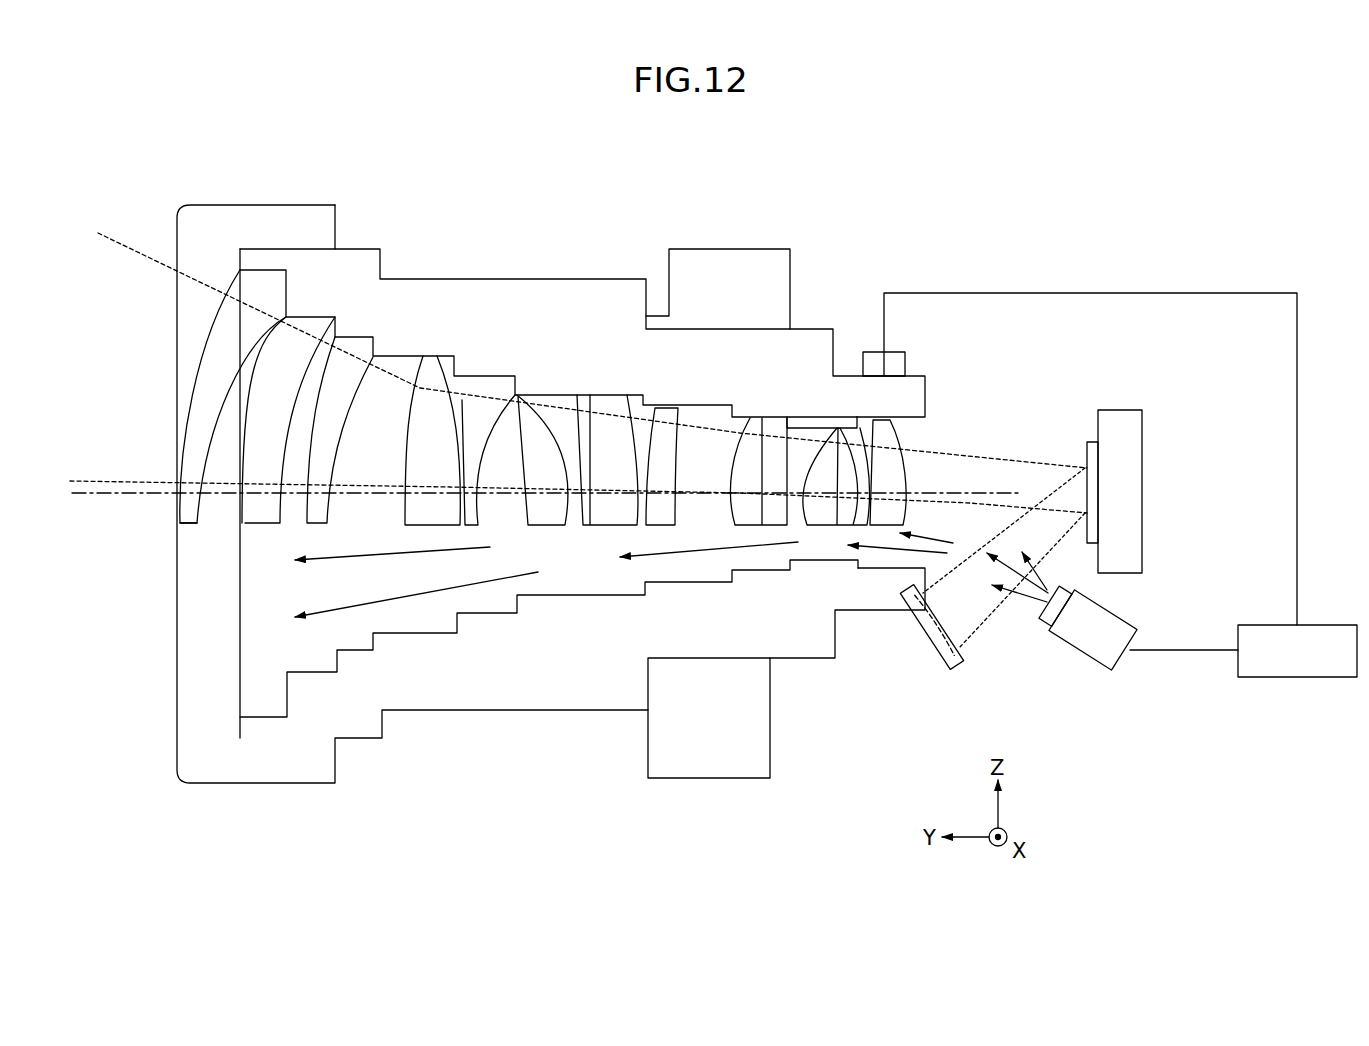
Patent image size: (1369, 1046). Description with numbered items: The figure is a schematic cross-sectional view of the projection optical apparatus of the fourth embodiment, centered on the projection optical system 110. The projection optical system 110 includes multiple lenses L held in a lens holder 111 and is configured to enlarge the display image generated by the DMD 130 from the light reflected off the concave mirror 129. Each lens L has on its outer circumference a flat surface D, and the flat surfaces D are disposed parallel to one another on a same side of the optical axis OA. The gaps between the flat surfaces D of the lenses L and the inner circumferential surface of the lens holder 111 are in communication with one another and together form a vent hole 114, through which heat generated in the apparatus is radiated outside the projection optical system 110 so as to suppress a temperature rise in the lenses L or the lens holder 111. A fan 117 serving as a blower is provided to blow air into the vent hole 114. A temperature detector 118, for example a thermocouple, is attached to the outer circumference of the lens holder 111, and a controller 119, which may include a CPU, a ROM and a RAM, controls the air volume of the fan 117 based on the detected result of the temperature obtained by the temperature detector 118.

The projection optical system 110 is at (806, 226).
The lens holder 111 is at (462, 288).
The vent hole 114 is at (270, 665).
The fan 117 is at (1087, 655).
The temperature detector 118 is at (877, 350).
The controller 119 is at (1270, 623).
The concave mirror 129 is at (942, 674).
The DMD 130 is at (1087, 453).
The lens L is at (205, 385).
The flat surface D is at (192, 525).
The optical axis OA is at (529, 494).